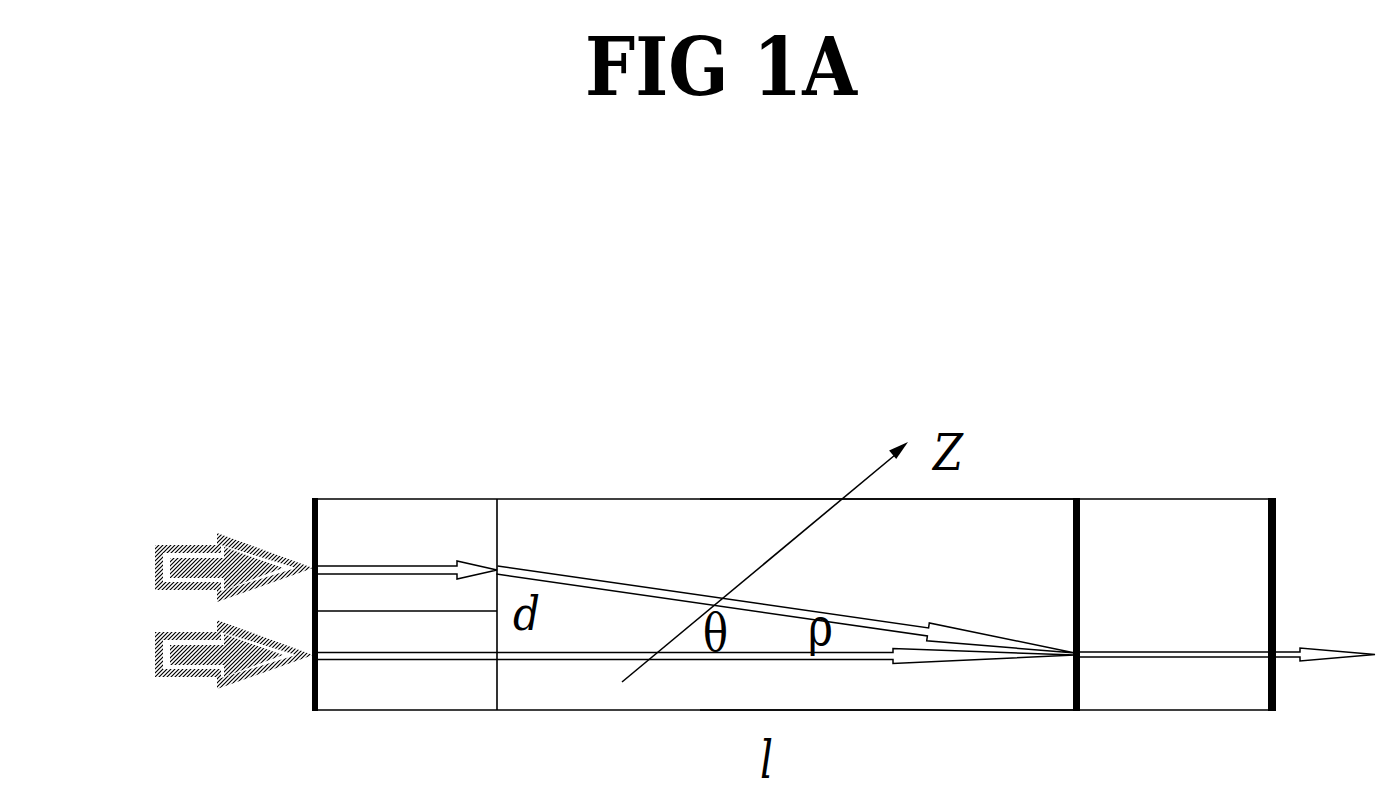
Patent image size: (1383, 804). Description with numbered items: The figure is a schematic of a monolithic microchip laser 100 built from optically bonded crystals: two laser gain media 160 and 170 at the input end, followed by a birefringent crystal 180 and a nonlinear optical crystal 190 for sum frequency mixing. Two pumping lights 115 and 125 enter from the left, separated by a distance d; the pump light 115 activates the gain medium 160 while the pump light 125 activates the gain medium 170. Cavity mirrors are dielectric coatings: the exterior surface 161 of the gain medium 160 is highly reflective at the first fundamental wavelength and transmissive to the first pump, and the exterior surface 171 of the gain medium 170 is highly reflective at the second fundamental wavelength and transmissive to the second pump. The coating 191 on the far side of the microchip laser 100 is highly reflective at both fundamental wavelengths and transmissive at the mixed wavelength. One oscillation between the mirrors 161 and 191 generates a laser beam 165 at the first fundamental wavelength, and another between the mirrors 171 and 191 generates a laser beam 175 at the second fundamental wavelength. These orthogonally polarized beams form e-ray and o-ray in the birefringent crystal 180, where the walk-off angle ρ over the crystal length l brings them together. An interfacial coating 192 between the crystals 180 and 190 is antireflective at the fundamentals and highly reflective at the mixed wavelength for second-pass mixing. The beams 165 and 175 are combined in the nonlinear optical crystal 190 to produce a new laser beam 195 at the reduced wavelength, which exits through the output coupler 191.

The monolithic microchip laser 100 is at (781, 556).
The pumping light 115 is at (571, 593).
The pumping light 125 is at (571, 654).
The laser gain medium 160 is at (407, 555).
The cavity mirror 161 is at (296, 579).
The laser beam 165 is at (785, 535).
The laser gain medium 170 is at (407, 661).
The cavity mirror 171 is at (296, 704).
The laser beam 175 is at (785, 689).
The birefringent crystal 180 is at (886, 604).
The nonlinear optical crystal 190 is at (1174, 604).
The cavity mirror 191 is at (1264, 579).
The interfacial coating 192 is at (1069, 579).
The laser beam 195 is at (1227, 629).